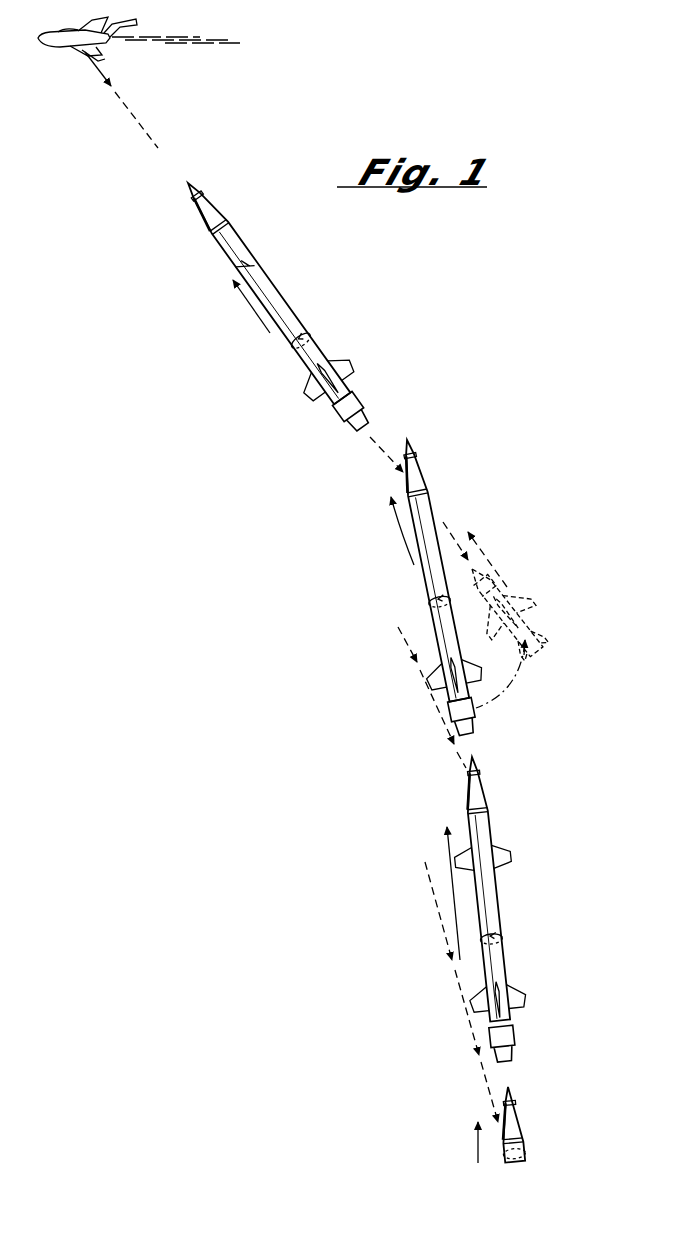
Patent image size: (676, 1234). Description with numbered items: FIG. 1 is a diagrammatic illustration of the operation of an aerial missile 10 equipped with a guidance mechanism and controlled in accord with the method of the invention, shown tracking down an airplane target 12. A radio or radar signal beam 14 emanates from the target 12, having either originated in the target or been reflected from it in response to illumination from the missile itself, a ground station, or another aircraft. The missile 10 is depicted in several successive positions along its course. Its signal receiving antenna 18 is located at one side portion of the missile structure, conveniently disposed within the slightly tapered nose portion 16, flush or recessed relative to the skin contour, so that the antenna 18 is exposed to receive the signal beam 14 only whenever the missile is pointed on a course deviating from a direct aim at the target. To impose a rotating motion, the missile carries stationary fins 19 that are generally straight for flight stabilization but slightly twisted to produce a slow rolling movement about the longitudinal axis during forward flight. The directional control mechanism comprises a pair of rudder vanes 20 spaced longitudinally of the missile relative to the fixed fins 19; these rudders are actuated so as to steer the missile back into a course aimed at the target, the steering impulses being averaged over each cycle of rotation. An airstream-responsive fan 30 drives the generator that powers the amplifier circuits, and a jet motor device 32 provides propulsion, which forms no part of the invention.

The aerial missile 10 is at (302, 298).
The airplane target 12 is at (70, 47).
The signal beam 14 is at (440, 923).
The nose portion 16 is at (218, 222).
The signal receiving antenna 18 is at (219, 233).
The stationary fins 19 is at (250, 263).
The rudder vanes 20 is at (458, 676).
The airstream-responsive fan 30 is at (203, 201).
The jet motor device 32 is at (352, 398).